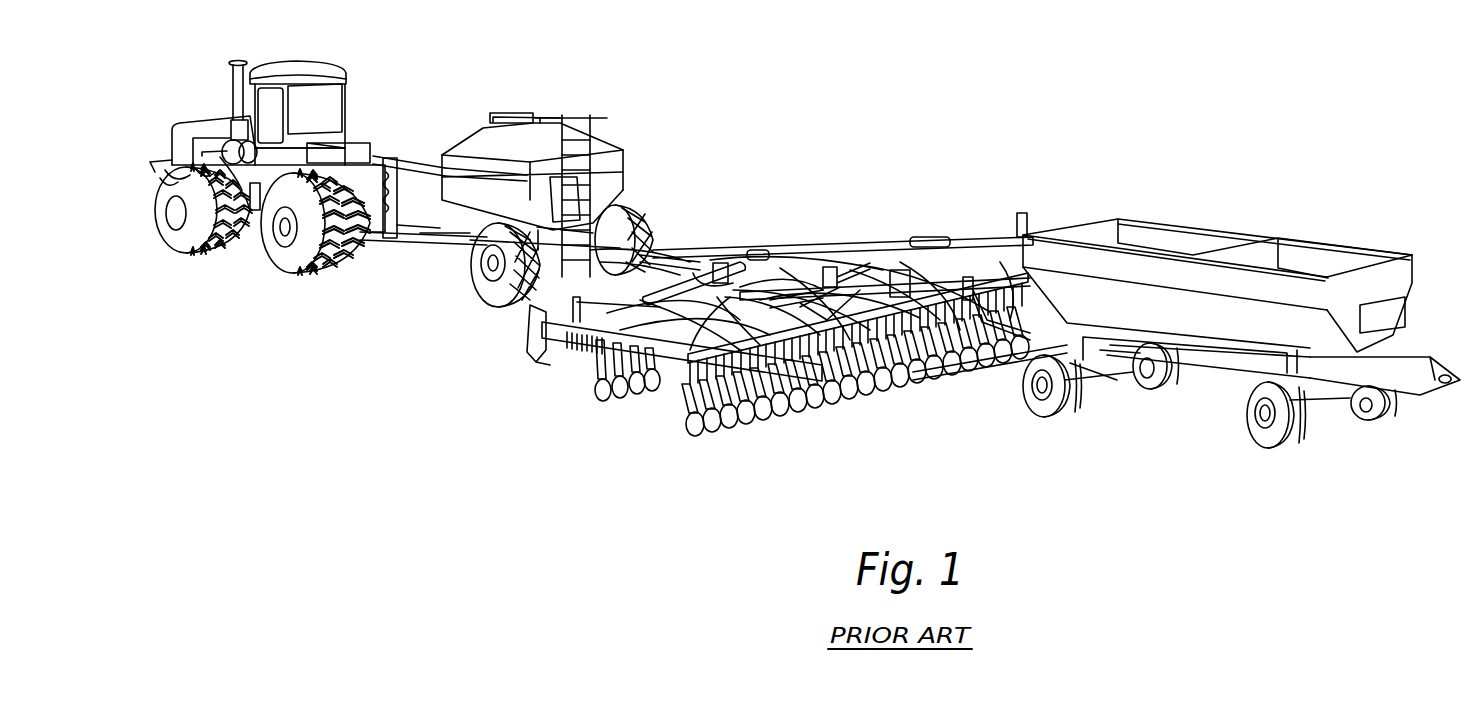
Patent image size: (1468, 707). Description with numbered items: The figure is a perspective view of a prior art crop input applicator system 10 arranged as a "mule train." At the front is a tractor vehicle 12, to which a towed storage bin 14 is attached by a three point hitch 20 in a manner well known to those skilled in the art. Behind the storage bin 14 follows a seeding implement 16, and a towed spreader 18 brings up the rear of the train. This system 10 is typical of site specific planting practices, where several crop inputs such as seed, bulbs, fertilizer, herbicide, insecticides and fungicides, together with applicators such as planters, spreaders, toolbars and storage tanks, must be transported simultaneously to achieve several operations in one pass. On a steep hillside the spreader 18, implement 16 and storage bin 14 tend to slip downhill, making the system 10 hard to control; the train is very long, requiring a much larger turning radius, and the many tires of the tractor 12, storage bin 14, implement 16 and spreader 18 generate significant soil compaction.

The crop input applicator system 10 is at (850, 98).
The tractor vehicle 12 is at (322, 53).
The towed storage bin 14 is at (626, 165).
The seeding implement 16 is at (888, 242).
The towed spreader 18 is at (1153, 216).
The three point hitch 20 is at (396, 260).